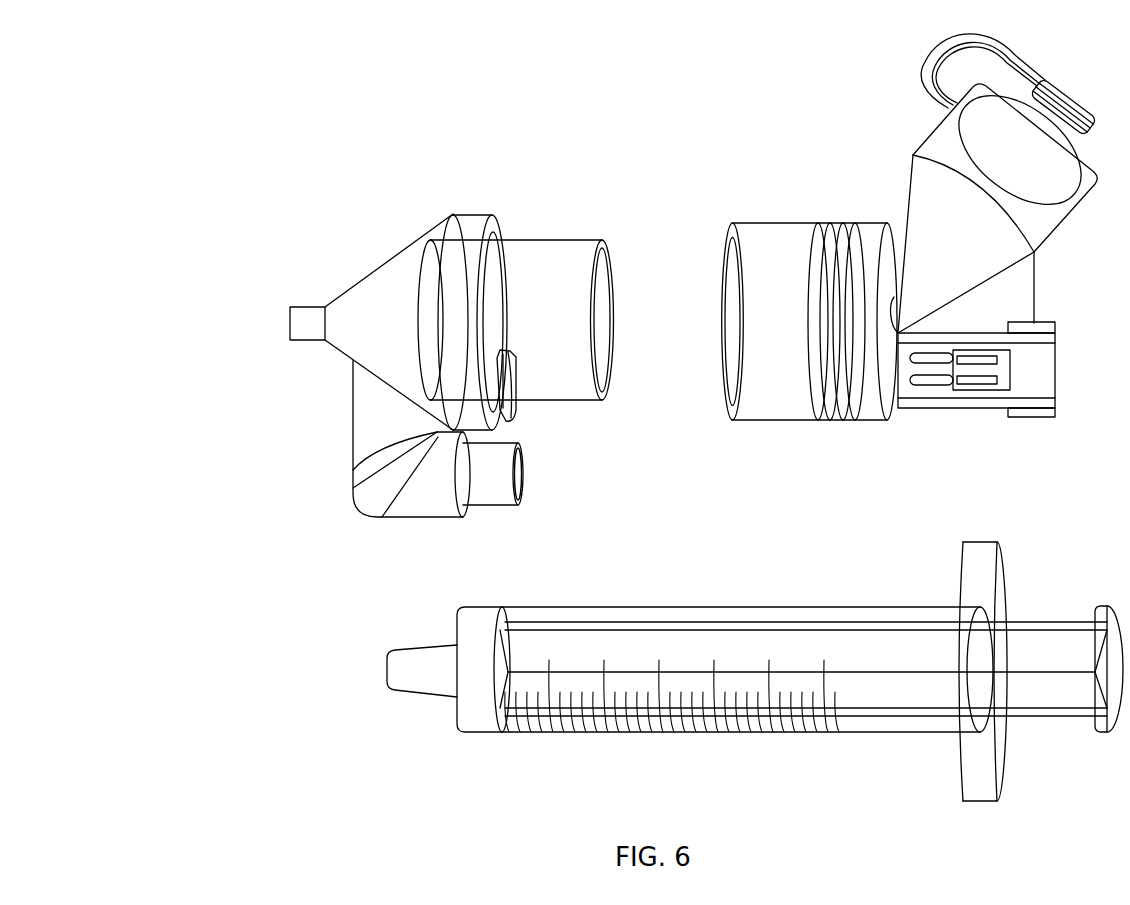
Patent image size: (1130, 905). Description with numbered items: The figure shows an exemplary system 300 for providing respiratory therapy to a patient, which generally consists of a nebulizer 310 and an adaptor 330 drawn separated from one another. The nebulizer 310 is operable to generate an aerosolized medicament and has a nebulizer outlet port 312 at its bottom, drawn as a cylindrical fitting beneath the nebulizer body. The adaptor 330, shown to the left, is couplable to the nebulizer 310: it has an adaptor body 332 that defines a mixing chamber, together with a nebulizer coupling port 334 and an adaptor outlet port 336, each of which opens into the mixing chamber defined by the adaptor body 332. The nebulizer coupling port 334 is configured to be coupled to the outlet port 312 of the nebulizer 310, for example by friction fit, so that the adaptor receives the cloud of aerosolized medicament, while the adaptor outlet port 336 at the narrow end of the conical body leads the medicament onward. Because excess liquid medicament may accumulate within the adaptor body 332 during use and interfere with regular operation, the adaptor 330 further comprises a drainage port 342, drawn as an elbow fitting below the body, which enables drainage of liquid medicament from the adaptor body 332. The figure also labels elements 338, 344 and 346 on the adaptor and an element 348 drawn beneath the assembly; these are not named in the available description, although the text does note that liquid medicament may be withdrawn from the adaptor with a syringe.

The system 300 is at (302, 77).
The nebulizer 310 is at (885, 199).
The nebulizer outlet port 312 is at (773, 222).
The adaptor 330 is at (318, 251).
The adaptor body 332 is at (347, 338).
The nebulizer coupling port 334 is at (600, 238).
The adaptor outlet port 336 is at (290, 323).
The hub body 338 is at (455, 263).
The drainage port 342 is at (348, 531).
The elbow body 344 is at (365, 445).
The elbow outlet tube 346 is at (493, 505).
The syringe 348 is at (757, 731).